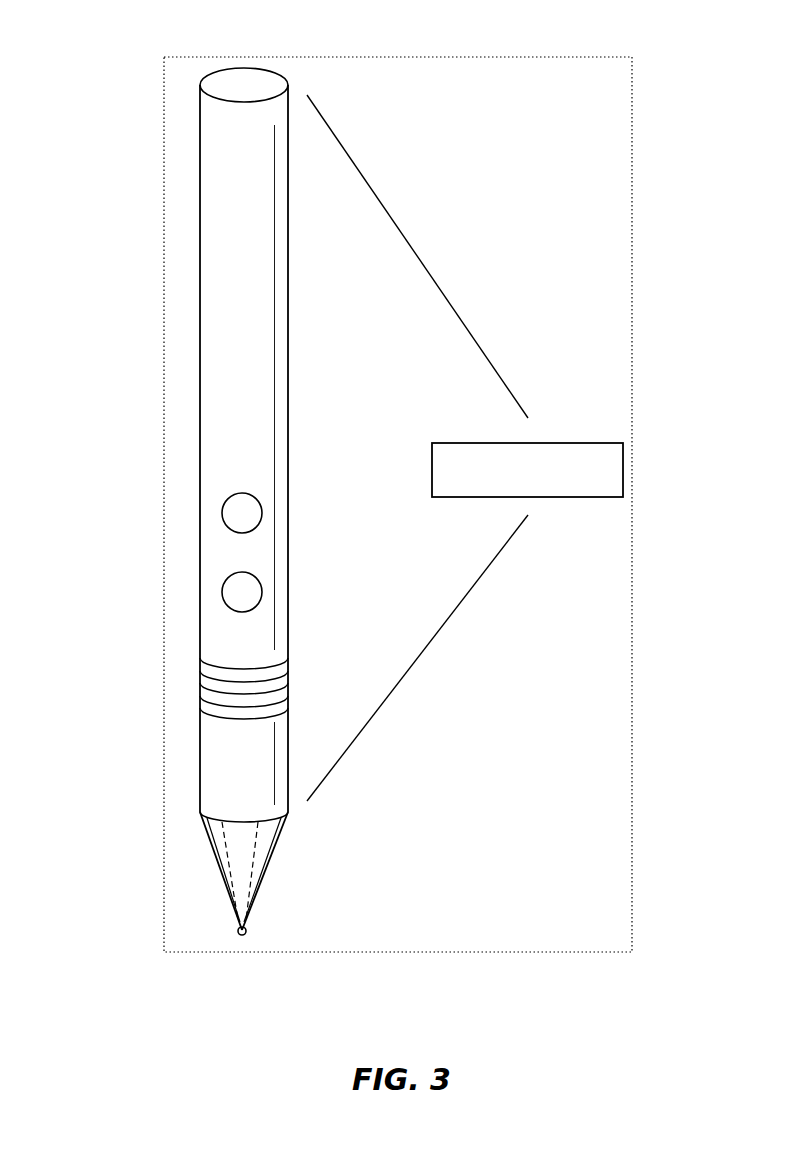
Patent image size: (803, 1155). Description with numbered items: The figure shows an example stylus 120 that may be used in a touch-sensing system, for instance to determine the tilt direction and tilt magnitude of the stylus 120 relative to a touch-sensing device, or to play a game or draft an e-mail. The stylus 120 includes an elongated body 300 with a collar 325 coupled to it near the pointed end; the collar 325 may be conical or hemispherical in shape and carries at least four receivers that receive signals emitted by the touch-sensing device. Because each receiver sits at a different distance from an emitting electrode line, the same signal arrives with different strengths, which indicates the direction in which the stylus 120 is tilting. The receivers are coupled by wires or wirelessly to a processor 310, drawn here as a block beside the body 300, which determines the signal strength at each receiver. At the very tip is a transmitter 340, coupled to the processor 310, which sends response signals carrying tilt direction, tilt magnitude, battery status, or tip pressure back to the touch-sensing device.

The stylus 120 is at (73, 34).
The body 300 is at (180, 268).
The processor 310 is at (641, 470).
The collar 325 is at (245, 813).
The transmitter 340 is at (257, 938).